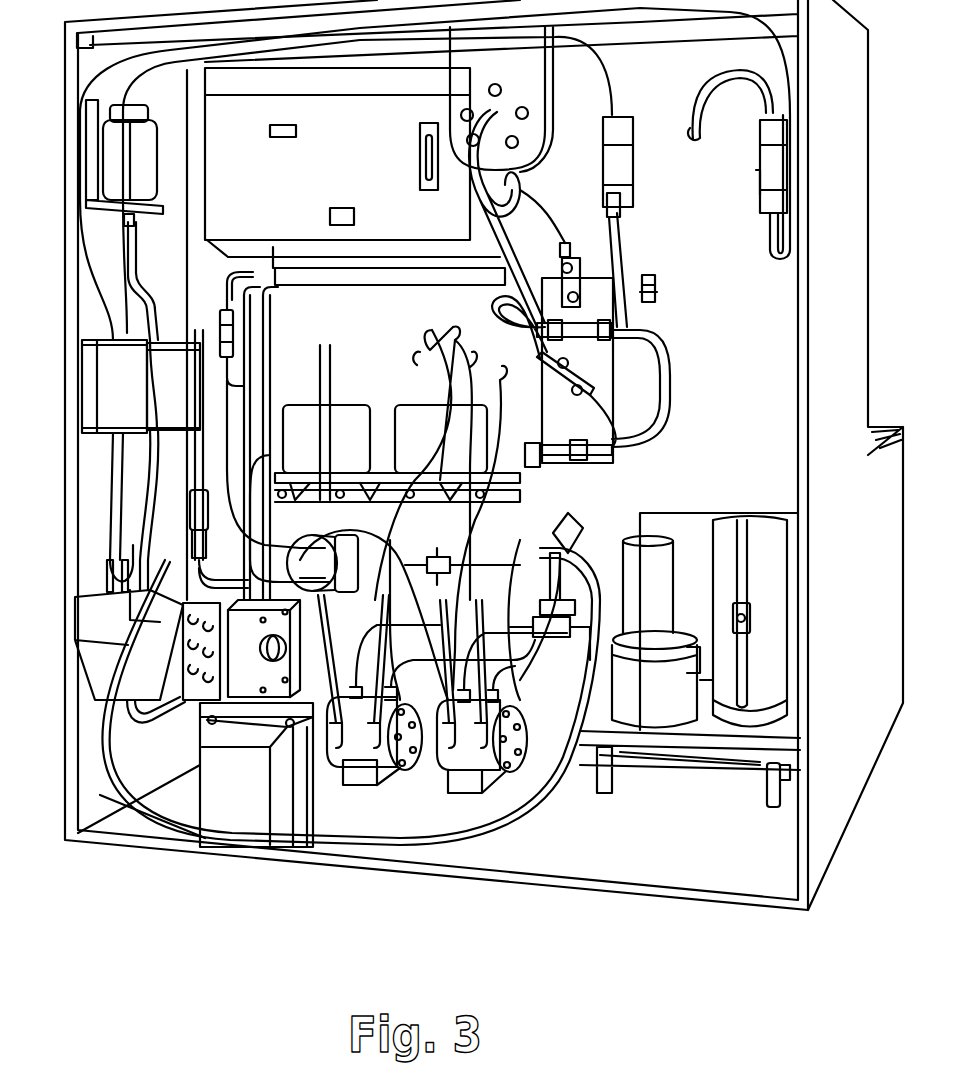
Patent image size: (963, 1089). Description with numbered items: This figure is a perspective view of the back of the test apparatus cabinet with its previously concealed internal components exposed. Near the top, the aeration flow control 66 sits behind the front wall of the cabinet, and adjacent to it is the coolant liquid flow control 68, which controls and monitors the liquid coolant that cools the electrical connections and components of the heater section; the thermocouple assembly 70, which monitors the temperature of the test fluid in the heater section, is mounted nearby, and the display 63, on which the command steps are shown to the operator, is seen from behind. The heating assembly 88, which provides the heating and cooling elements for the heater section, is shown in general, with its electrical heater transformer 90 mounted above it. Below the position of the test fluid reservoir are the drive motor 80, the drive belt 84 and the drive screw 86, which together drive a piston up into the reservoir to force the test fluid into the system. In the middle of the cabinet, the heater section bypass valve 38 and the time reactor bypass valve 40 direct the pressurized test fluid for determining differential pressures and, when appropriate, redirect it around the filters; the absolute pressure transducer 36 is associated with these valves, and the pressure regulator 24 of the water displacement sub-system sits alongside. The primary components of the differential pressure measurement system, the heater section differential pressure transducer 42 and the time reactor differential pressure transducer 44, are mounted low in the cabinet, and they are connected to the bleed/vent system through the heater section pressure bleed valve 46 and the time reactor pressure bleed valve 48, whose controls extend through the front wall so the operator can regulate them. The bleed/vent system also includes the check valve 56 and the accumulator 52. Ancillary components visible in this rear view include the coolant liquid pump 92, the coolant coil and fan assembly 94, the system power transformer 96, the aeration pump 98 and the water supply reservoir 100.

The pressure regulator 24 is at (302, 560).
The absolute pressure transducer 36 is at (478, 637).
The heater section bypass valve 38 is at (294, 452).
The time reactor bypass valve 40 is at (420, 412).
The heater section differential pressure transducer 42 is at (358, 785).
The time reactor differential pressure transducer 44 is at (468, 795).
The heater section pressure bleed valve 46 is at (570, 530).
The time reactor pressure bleed valve 48 is at (562, 640).
The accumulator 52 is at (200, 473).
The check valve 56 is at (226, 328).
The display 63 is at (314, 188).
The aeration flow control 66 is at (768, 200).
The coolant liquid flow control 68 is at (636, 197).
The thermocouple assembly 70 is at (658, 294).
The drive motor 80 is at (631, 605).
The drive belt 84 is at (708, 772).
The drive screw 86 is at (775, 637).
The heating assembly 88 is at (605, 457).
The electrical heater transformer 90 is at (481, 62).
The coolant liquid pump 92 is at (98, 660).
The coolant coil and fan assembly 94 is at (290, 627).
The system power transformer 96 is at (218, 812).
The aeration pump 98 is at (105, 382).
The water supply reservoir 100 is at (150, 157).